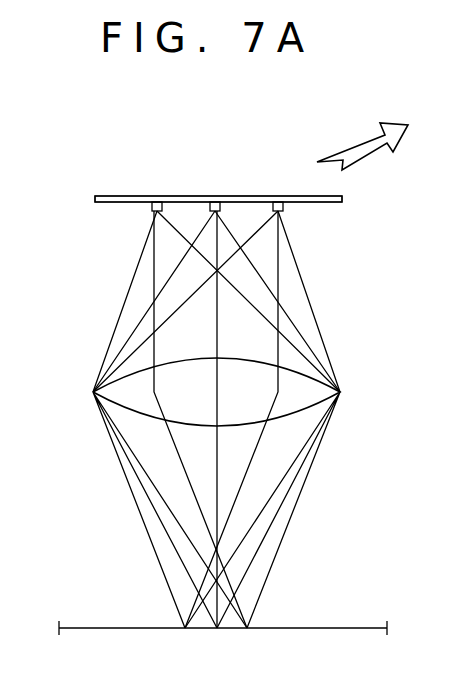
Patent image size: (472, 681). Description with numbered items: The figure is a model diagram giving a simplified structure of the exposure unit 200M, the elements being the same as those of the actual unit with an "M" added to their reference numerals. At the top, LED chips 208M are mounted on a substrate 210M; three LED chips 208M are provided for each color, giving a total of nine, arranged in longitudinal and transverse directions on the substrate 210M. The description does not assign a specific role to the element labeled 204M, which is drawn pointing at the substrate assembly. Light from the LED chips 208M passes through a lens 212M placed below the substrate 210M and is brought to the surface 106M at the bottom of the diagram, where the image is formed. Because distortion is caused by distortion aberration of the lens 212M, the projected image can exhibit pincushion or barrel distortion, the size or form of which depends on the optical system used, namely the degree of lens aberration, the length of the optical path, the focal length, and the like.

The light emitting element array 204M is at (128, 207).
The substrate 210M is at (332, 202).
The LED chips 208M is at (274, 197).
The exposure unit 200M is at (66, 355).
The lens 212M is at (312, 383).
The photosensitive surface 106M is at (337, 628).